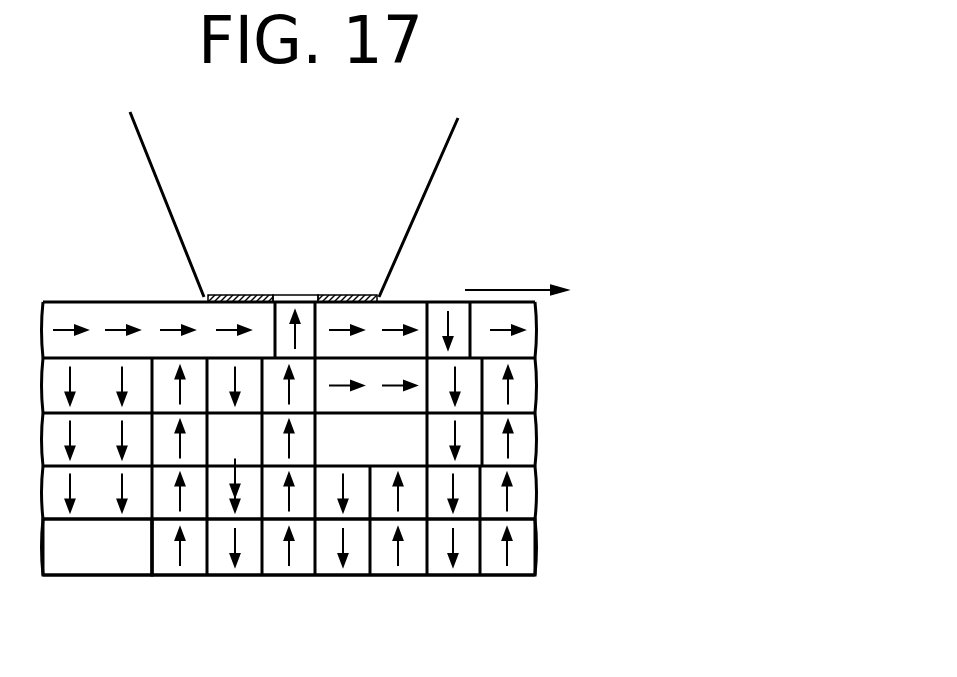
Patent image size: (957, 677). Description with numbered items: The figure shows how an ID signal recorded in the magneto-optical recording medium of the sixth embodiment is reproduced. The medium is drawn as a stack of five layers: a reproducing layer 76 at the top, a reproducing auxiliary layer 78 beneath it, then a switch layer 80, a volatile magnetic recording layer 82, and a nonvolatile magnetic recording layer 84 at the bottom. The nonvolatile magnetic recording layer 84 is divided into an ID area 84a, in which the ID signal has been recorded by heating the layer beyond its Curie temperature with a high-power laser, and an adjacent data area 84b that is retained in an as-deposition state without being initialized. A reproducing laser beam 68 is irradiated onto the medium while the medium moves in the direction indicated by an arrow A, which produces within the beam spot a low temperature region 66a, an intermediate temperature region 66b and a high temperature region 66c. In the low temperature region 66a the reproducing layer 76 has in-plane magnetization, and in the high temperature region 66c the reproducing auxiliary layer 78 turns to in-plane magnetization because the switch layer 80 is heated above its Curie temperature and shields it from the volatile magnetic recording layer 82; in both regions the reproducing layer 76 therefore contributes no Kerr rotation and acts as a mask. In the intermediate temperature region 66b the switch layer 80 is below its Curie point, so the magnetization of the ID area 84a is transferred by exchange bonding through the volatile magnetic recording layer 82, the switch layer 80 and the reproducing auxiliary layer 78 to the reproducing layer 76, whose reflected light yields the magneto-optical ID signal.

The reproducing laser beam 68 is at (450, 140).
The low temperature region 66a is at (240, 290).
The intermediate temperature region 66b is at (292, 290).
The high temperature region 66c is at (342, 290).
The arrow A is at (503, 290).
The reproducing layer 76 is at (537, 330).
The reproducing auxiliary layer 78 is at (537, 389).
The switch layer 80 is at (537, 447).
The volatile magnetic recording layer 82 is at (535, 498).
The nonvolatile magnetic recording layer 84 is at (532, 550).
The ID area 84a is at (530, 594).
The data area 84b is at (98, 577).